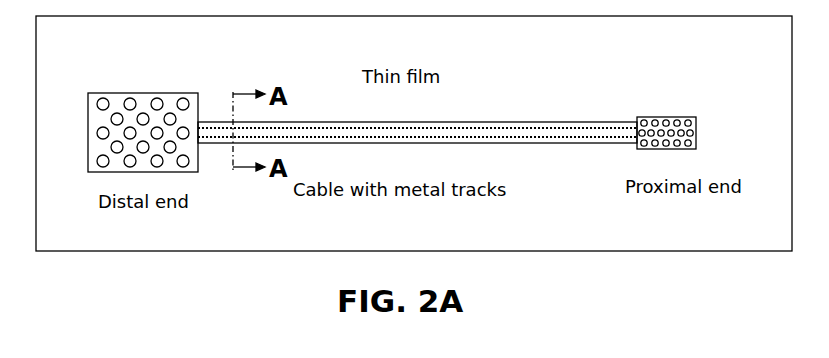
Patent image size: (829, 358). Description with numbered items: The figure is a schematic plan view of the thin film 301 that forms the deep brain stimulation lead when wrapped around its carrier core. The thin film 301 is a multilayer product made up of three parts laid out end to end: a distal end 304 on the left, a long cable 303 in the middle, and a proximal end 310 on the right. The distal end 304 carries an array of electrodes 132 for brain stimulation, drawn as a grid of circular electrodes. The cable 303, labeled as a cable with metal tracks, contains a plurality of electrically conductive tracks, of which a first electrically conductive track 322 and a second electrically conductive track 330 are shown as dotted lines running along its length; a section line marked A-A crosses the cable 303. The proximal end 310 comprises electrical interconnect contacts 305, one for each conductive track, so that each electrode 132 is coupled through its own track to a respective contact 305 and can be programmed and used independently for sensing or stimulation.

The thin film 301 is at (766, 57).
The array of electrodes 132 is at (145, 105).
The distal end 304 is at (187, 173).
The cable 303 is at (479, 124).
The first electrically conductive track 322 is at (340, 127).
The second electrically conductive track 330 is at (353, 137).
The electrical interconnect contacts 305 is at (657, 118).
The proximal end 310 is at (640, 150).